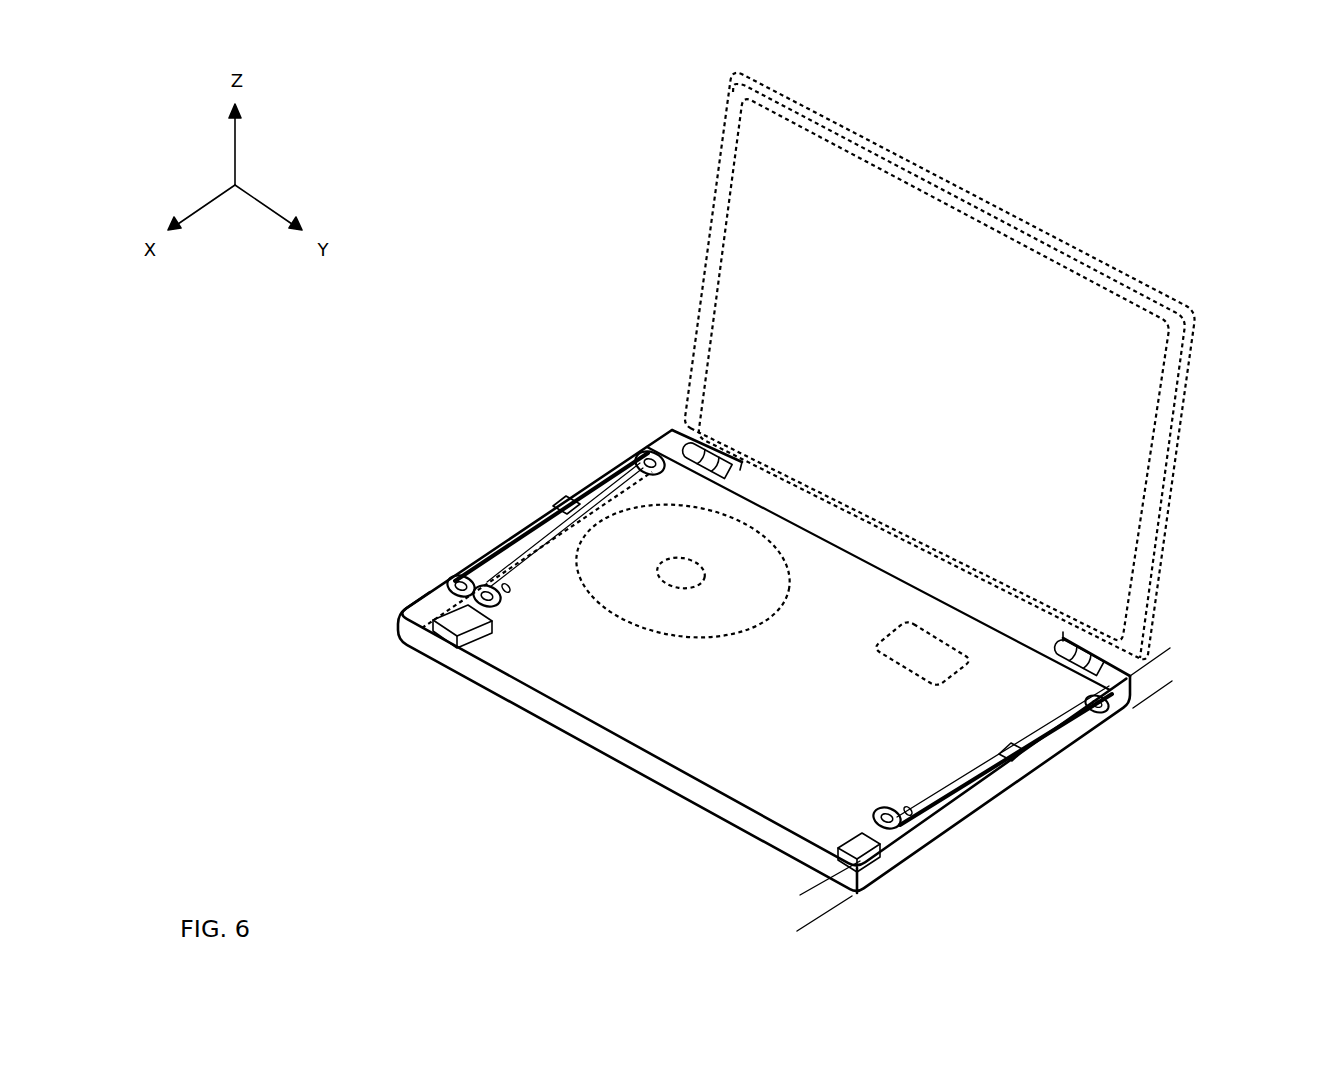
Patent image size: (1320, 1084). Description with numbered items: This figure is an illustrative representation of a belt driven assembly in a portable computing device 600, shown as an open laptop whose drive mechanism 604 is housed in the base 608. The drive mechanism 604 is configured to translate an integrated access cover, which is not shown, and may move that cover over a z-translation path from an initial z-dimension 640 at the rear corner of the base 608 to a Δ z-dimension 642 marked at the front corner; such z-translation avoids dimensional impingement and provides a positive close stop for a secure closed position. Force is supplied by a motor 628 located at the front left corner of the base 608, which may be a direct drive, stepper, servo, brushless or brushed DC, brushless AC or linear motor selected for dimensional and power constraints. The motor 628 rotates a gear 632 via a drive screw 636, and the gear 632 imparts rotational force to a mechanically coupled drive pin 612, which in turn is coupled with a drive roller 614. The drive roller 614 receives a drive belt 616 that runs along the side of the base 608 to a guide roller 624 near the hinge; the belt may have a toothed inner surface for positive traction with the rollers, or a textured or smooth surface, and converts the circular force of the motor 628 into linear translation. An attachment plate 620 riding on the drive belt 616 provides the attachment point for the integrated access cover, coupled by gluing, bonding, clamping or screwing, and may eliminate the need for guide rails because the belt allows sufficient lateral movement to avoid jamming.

The portable computing device 600 is at (1137, 203).
The drive mechanism 604 is at (940, 906).
The base 608 is at (632, 773).
The drive pin 612 is at (452, 590).
The drive roller 614 is at (455, 578).
The drive belt 616 is at (508, 537).
The attachment plate 620 is at (556, 502).
The guide roller 624 is at (638, 456).
The motor 628 is at (435, 612).
The gear 632 is at (487, 608).
The drive screw 636 is at (508, 596).
The initial z-dimension 640 is at (1184, 662).
The Δ z-dimension 642 is at (768, 905).